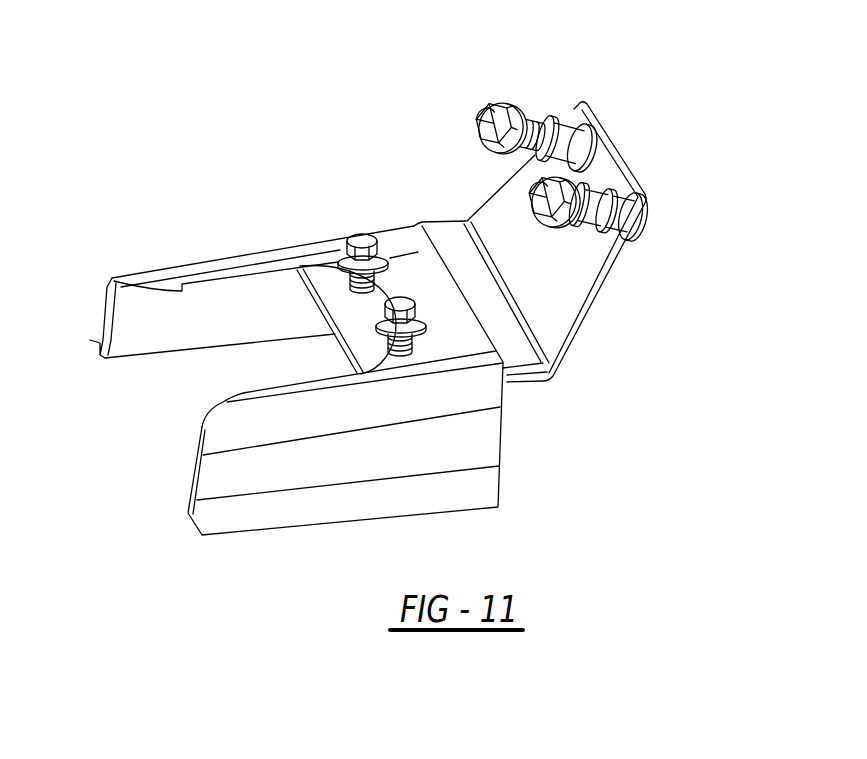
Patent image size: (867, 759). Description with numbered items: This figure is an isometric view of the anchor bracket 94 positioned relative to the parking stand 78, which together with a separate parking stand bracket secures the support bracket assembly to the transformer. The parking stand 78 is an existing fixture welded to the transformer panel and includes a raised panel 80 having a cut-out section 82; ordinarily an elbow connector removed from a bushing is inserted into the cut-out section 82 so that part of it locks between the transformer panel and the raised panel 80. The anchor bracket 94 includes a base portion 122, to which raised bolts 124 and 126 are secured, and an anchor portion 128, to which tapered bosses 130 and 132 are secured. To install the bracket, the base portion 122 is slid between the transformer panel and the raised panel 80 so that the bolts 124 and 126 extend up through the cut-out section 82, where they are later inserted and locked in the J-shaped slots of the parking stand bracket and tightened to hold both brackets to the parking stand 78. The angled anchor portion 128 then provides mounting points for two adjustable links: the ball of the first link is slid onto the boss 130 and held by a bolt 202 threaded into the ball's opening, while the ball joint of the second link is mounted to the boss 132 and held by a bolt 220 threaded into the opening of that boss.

The parking stand 78 is at (180, 463).
The raised panel 80 is at (398, 228).
The cut-out section 82 is at (334, 379).
The anchor bracket 94 is at (646, 128).
The base portion 122 is at (350, 316).
The raised bolt 124 is at (358, 242).
The raised bolt 126 is at (397, 320).
The anchor portion 128 is at (567, 258).
The tapered boss 130 is at (552, 128).
The tapered boss 132 is at (592, 205).
The bolt 202 is at (490, 116).
The bolt 220 is at (540, 190).